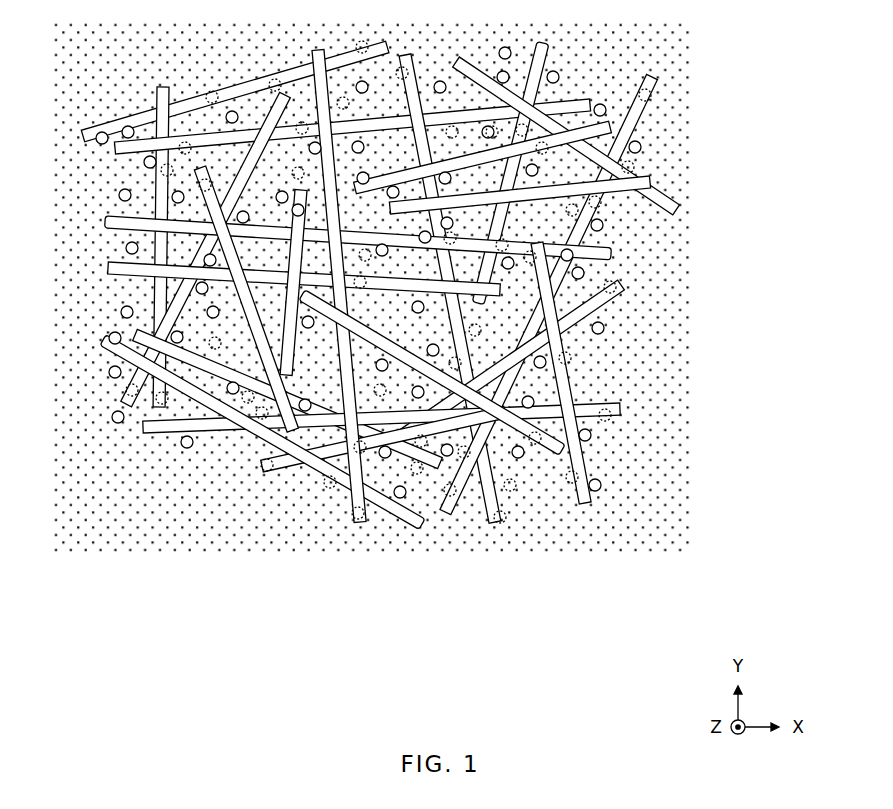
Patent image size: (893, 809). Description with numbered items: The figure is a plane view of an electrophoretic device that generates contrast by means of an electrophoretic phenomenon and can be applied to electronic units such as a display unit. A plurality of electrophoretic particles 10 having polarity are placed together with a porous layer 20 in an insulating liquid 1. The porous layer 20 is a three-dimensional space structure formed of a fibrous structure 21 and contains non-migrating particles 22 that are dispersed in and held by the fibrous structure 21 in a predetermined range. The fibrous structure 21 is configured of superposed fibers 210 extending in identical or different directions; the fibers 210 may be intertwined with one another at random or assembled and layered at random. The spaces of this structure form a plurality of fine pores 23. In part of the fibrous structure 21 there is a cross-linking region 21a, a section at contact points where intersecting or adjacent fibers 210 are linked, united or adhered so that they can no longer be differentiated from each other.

The insulating liquid 1 is at (640, 542).
The electrophoretic particles 10 is at (234, 394).
The porous layer 20 is at (320, 657).
The fibrous structure 21 is at (288, 616).
The fibers 210 is at (338, 410).
The cross-linking region 21a is at (600, 205).
The non-migrating particles 22 is at (421, 447).
The fine pores 23 is at (546, 408).